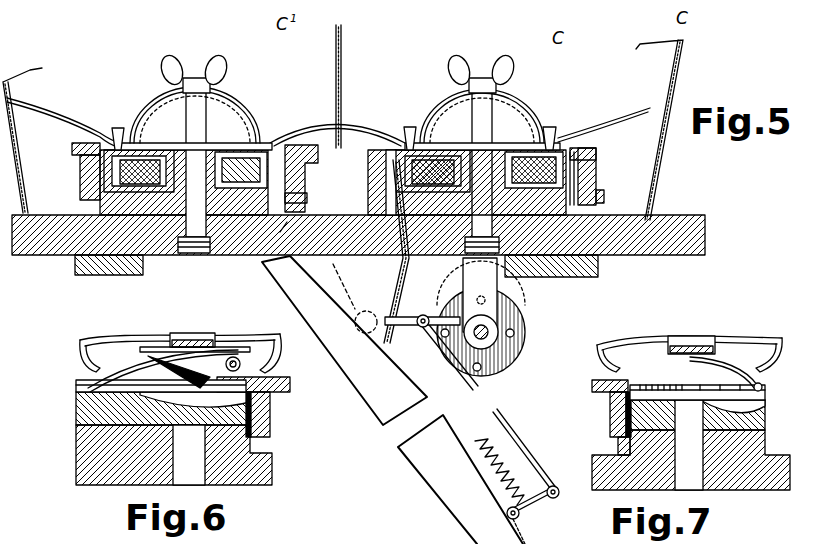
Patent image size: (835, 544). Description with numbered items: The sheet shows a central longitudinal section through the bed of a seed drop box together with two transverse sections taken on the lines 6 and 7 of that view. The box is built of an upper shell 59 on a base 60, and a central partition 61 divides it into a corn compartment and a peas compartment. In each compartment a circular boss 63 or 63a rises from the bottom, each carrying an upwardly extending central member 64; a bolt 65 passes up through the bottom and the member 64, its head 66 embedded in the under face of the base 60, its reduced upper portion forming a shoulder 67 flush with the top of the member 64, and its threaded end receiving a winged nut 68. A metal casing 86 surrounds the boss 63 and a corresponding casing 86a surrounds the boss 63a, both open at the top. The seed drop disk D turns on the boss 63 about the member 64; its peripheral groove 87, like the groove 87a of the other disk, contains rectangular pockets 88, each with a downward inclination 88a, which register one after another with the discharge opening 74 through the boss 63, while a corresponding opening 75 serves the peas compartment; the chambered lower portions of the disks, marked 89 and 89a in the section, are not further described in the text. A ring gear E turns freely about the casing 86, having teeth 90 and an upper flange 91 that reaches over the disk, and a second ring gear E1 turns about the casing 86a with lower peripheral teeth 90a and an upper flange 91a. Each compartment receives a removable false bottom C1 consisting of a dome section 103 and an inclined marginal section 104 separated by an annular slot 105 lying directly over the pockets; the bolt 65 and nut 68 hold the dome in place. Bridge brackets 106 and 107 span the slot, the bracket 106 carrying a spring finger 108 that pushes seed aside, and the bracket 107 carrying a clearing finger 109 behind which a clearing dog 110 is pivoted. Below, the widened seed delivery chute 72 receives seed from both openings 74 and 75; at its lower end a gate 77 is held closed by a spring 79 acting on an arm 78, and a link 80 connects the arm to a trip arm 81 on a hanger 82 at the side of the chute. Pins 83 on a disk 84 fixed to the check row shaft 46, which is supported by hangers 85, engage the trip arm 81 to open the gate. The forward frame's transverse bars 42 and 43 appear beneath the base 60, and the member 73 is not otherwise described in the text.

In FIG. 5, the transverse bar 42 is at (75, 268).
In FIG. 5, the transverse bar 43 is at (598, 272).
In FIG. 5, the check row shaft 46 is at (488, 330).
In FIG. 5, the upper shell 59 is at (668, 176).
In FIG. 5, the base 60 is at (358, 235).
In FIG. 6, the base 60 is at (112, 488).
In FIG. 7, the base 60 is at (750, 490).
In FIG. 5, the partition 61 is at (343, 94).
In FIG. 5, the circular boss 63 is at (184, 189).
In FIG. 5, the circular boss 63a is at (467, 189).
In FIG. 5, the central circular member 64 is at (214, 148).
In FIG. 5, the bolt 65 is at (186, 210).
In FIG. 5, the bolt head 66 is at (193, 254).
In FIG. 5, the angular shoulder 67 is at (180, 143).
In FIG. 5, the winged nut 68 is at (216, 68).
In FIG. 5, the seed delivery chute 72 is at (410, 466).
In FIG. 5, the arm 73 is at (296, 312).
In FIG. 5, the discharge opening 74 is at (339, 165).
In FIG. 6, the discharge opening 74 is at (189, 455).
In FIG. 7, the discharge opening 74 is at (689, 445).
In FIG. 5, the discharge opening 75 is at (394, 251).
In FIG. 5, the gate 77 is at (528, 538).
In FIG. 5, the arm 78 is at (558, 495).
In FIG. 5, the spring 79 is at (508, 468).
In FIG. 5, the link 80 is at (520, 449).
In FIG. 5, the trip arm 81 is at (411, 317).
In FIG. 5, the hanger 82 is at (352, 311).
In FIG. 5, the pins 83 is at (516, 335).
In FIG. 5, the disk 84 is at (518, 370).
In FIG. 5, the hanger 85 is at (490, 277).
In FIG. 5, the metal casing 86 is at (306, 206).
In FIG. 6, the metal casing 86 is at (262, 445).
In FIG. 7, the metal casing 86 is at (620, 448).
In FIG. 5, the metal casing 86a is at (598, 208).
In FIG. 6, the annular groove 87 is at (178, 372).
In FIG. 7, the annular groove 87a is at (762, 386).
In FIG. 5, the apertures 88 is at (185, 171).
In FIG. 6, the apertures 88 is at (163, 408).
In FIG. 7, the apertures 88 is at (697, 415).
In FIG. 5, the downward inclination 88a is at (290, 150).
In FIG. 6, the downward inclination 88a is at (100, 432).
In FIG. 7, the downward inclination 88a is at (760, 397).
In FIG. 5, the packing 89 is at (410, 172).
In FIG. 5, the packing 89a is at (534, 170).
In FIG. 5, the teeth 90 is at (72, 144).
In FIG. 6, the teeth 90 is at (291, 385).
In FIG. 7, the teeth 90 is at (592, 380).
In FIG. 5, the peripheral teeth 90a is at (600, 192).
In FIG. 5, the upper flange 91 is at (90, 142).
In FIG. 6, the upper flange 91 is at (82, 380).
In FIG. 7, the upper flange 91 is at (655, 385).
In FIG. 5, the flange 91a is at (560, 150).
In FIG. 5, the dome-like section 103 is at (230, 95).
In FIG. 5, the marginal section 104 is at (52, 114).
In FIG. 5, the annular slot 105 is at (123, 128).
In FIG. 7, the bridge bracket 106 is at (704, 345).
In FIG. 6, the bridge bracket 107 is at (192, 345).
In FIG. 7, the spring finger 108 is at (736, 358).
In FIG. 6, the spring finger 109 is at (110, 378).
In FIG. 6, the clearing dog 110 is at (225, 368).
In FIG. 5, the section line 6 is at (266, 99).
In FIG. 5, the section line 7 is at (108, 84).
In FIG. 6, the false bottom C1 is at (276, 356).
In FIG. 7, the false bottom C1 is at (652, 334).
In FIG. 5, the seed drop disk D is at (234, 170).
In FIG. 5, the ring gear E is at (80, 182).
In FIG. 6, the ring gear E is at (272, 413).
In FIG. 7, the ring gear E is at (610, 431).
In FIG. 5, the ring gear E1 is at (596, 158).